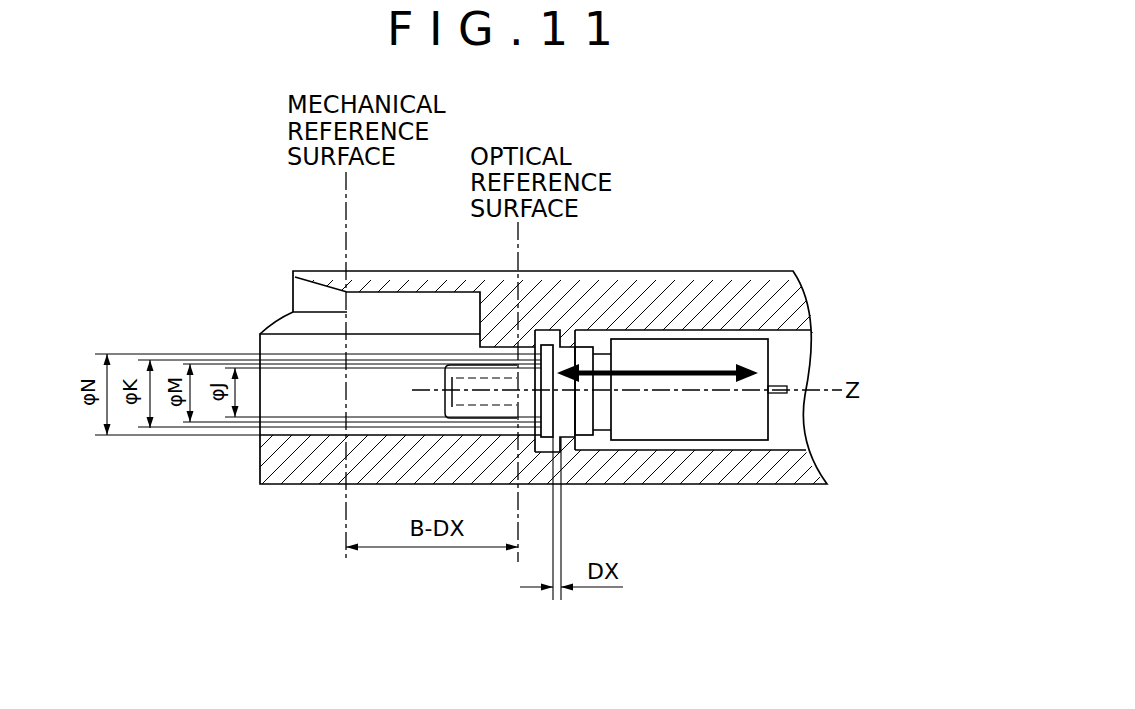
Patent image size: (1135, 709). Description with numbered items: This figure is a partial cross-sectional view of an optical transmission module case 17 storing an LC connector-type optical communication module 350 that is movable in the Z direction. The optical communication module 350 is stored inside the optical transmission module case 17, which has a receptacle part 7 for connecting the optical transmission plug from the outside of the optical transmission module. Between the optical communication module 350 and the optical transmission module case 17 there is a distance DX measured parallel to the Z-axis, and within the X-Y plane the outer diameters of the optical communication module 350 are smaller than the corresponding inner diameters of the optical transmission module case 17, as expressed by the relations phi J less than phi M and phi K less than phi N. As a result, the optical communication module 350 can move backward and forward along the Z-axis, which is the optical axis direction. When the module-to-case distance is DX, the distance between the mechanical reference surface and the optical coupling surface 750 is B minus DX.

The receptacle part 7 is at (298, 367).
The optical transmission module case 17 is at (720, 484).
The optical communication module 350 is at (770, 423).
The optical coupling surface 750 is at (517, 388).